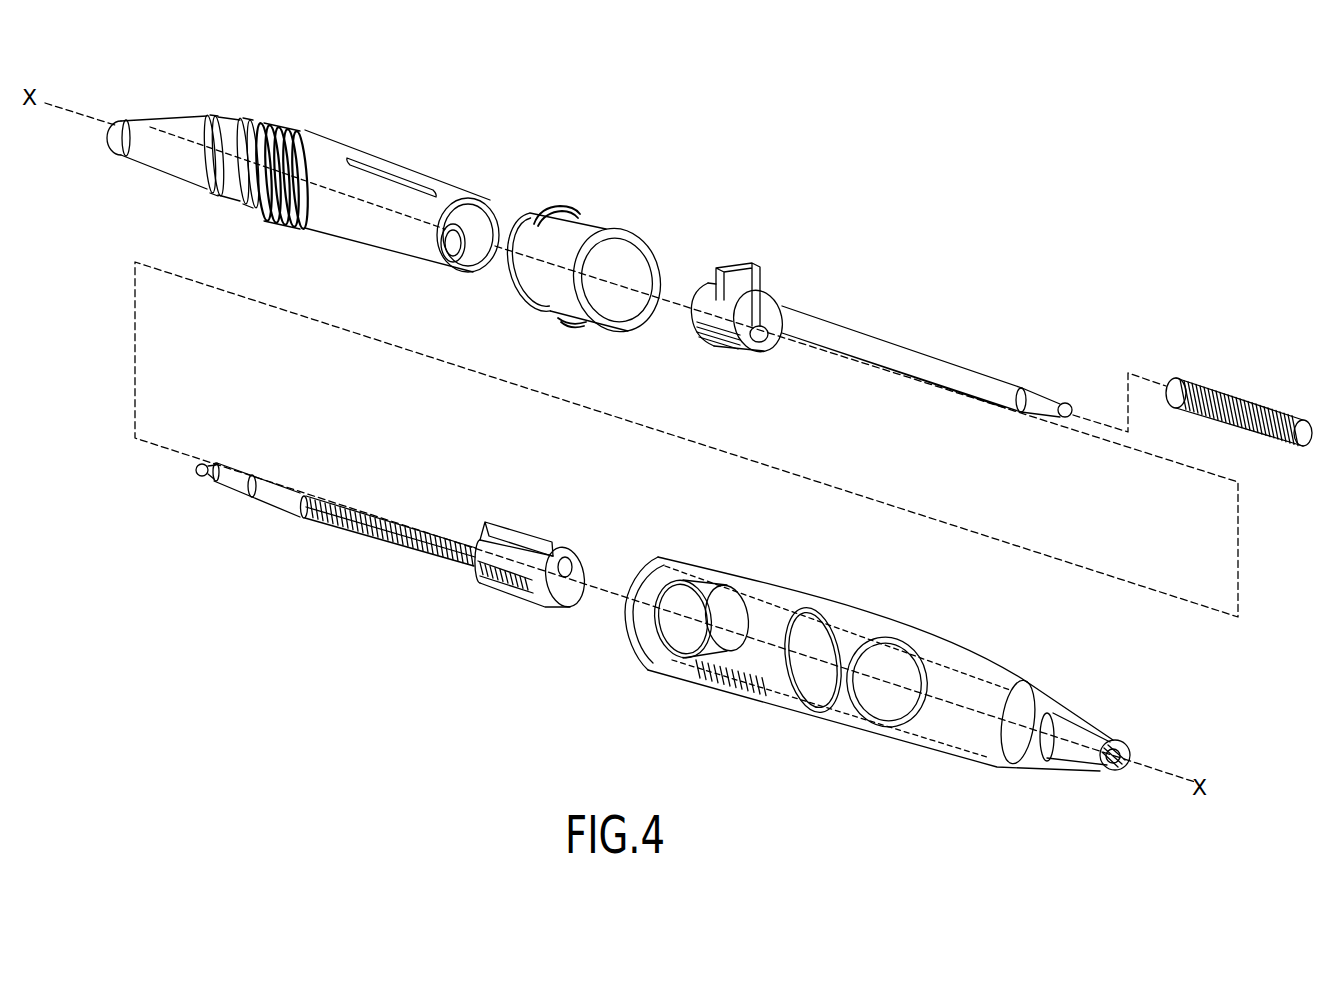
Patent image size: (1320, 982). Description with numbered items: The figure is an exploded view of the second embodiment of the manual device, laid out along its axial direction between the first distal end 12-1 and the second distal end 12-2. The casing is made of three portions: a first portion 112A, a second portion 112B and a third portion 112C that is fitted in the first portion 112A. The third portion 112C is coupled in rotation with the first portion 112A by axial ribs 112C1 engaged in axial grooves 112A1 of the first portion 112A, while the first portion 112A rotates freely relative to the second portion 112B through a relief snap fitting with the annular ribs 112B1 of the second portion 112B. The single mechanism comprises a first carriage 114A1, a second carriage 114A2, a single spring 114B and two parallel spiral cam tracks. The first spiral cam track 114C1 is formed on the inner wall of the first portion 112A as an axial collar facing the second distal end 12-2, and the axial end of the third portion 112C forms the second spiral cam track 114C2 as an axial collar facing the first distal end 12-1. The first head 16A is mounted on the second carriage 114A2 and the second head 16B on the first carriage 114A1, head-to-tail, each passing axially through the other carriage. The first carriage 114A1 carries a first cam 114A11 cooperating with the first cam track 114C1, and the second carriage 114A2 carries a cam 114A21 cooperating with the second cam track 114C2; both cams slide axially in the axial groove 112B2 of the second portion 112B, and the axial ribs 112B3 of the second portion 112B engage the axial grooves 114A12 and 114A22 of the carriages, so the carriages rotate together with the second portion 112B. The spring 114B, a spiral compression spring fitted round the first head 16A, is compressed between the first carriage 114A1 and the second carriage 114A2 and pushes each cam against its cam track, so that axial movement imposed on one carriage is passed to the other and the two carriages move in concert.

The first distal end 12-1 is at (1128, 736).
The second distal end 12-2 is at (108, 134).
The first head 16A is at (976, 371).
The second head 16B is at (394, 517).
The first portion 112A is at (884, 745).
The axial grooves 112A1 is at (720, 557).
The second portion 112B is at (222, 117).
The annular ribs 112B1 is at (285, 124).
The axial groove 112B2 is at (430, 172).
The axial ribs 112B3 is at (453, 262).
The third portion 112C is at (607, 212).
The axial ribs 112C1 is at (566, 212).
The first carriage 114A1 is at (576, 607).
The first cam 114A11 is at (532, 522).
The axial groove 114A12 is at (503, 590).
The second carriage 114A2 is at (778, 292).
The cam 114A21 is at (718, 264).
The axial groove 114A22 is at (727, 347).
The spring 114B is at (1252, 400).
The first spiral cam track 114C1 is at (895, 634).
The second spiral cam track 114C2 is at (660, 288).